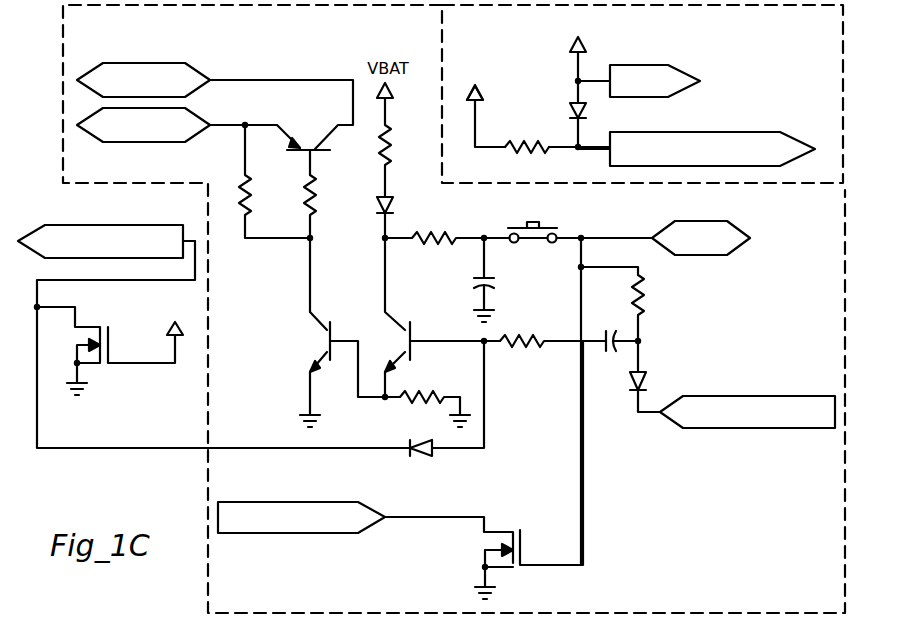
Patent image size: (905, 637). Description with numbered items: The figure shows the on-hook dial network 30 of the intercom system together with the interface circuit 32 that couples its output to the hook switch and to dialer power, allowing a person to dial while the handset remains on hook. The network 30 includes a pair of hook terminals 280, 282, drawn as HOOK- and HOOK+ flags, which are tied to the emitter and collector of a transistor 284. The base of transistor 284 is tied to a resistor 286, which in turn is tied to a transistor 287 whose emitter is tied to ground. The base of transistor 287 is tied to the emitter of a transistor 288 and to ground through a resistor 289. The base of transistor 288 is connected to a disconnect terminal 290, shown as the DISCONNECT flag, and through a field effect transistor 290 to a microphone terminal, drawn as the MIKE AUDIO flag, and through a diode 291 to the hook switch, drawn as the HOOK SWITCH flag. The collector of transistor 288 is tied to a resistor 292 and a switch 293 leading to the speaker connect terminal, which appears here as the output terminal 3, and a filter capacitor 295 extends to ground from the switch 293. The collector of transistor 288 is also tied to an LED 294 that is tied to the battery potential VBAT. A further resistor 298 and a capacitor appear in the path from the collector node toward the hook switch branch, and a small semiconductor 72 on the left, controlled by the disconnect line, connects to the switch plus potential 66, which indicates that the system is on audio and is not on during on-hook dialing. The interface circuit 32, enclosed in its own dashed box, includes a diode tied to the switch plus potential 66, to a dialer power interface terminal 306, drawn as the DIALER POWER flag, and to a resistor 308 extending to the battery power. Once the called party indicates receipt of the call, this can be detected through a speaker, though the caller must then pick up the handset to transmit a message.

The on-hook dial network 30 is at (59, 35).
The interface circuit 32 is at (752, 183).
The hook terminal 280 is at (77, 80).
The hook terminal 282 is at (77, 125).
The transistor 284 is at (310, 146).
The resistor 286 is at (315, 200).
The LED 294 is at (312, 238).
The resistor 292 is at (447, 226).
The switch 293 is at (538, 223).
The filter capacitor 295 is at (476, 282).
The output terminal 3 is at (665, 238).
The transistor 287 is at (324, 348).
The transistor 288 is at (400, 342).
The resistor 289 is at (422, 395).
The resistor 298 is at (528, 335).
The diode 291 is at (644, 386).
The disconnect terminal / field effect transistor 290 is at (18, 241).
The MOSFET 72 is at (82, 330).
The switch plus potential 66 is at (170, 324).
The dialer power interface terminal 306 is at (815, 149).
The resistor 308 is at (511, 143).